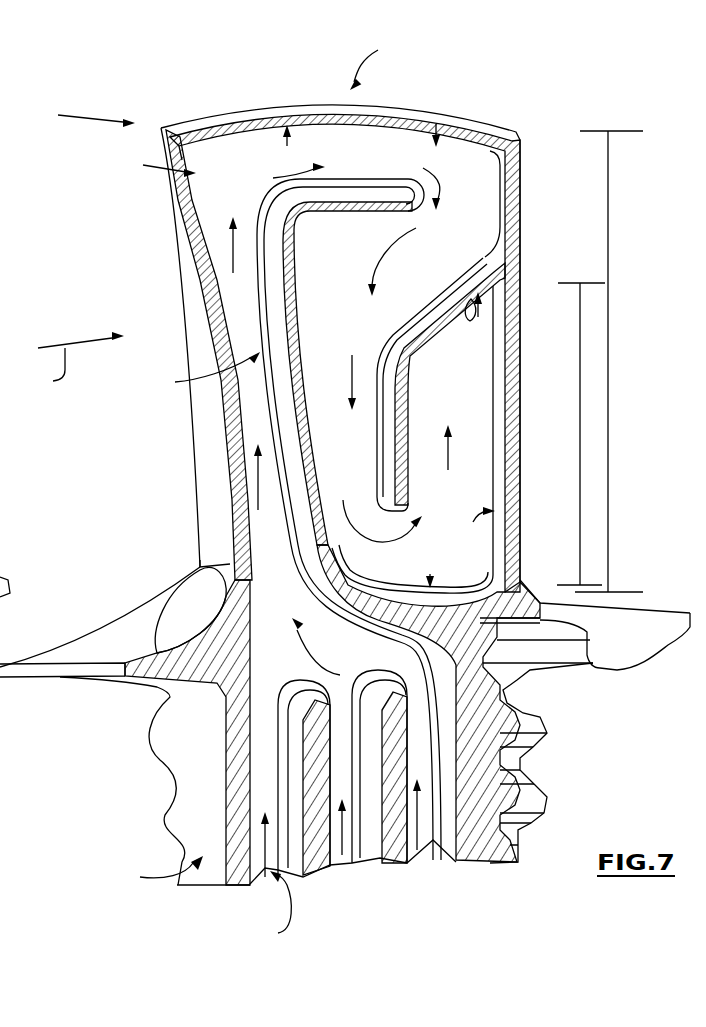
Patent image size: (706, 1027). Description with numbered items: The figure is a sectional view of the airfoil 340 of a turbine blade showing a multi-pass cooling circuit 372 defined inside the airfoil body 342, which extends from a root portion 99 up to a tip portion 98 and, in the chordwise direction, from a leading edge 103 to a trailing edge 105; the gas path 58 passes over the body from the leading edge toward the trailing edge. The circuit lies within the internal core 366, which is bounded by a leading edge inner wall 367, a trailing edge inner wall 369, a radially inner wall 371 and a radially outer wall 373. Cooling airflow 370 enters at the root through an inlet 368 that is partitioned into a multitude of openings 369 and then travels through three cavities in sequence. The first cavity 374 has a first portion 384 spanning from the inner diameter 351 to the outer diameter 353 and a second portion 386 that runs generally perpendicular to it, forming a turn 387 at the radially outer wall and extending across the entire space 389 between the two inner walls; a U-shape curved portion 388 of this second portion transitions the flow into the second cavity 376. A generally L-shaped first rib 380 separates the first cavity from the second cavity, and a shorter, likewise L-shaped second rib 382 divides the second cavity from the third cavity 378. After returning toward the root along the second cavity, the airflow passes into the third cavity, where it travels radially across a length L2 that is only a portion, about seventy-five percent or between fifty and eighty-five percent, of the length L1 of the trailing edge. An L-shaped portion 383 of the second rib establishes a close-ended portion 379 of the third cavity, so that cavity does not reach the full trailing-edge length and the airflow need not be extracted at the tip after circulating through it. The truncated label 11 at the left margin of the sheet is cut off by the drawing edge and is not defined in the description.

The gas turbine engine 11 is at (9, 563).
The gas path 58 is at (74, 364).
The tip portion 98 is at (388, 113).
The root portion 99 is at (522, 790).
The leading edge 103 is at (180, 278).
The trailing edge 105 is at (512, 246).
The airfoil 340 is at (384, 61).
The airfoil body 342 is at (196, 372).
The inner diameter 351 is at (173, 873).
The outer diameter 353 is at (72, 118).
The internal core 366 is at (146, 169).
The leading edge inner wall 367 is at (230, 573).
The inlet 368 is at (282, 813).
The openings 369 is at (510, 520).
The cooling airflow 370 is at (273, 178).
The radially inner wall 371 is at (430, 574).
The cooling circuit 372 is at (436, 124).
The radially outer wall 373 is at (284, 143).
The first cavity 374 is at (240, 316).
The second cavity 376 is at (350, 319).
The third cavity 378 is at (481, 418).
The close-ended portion 379 is at (468, 282).
The first rib 380 is at (288, 423).
The second rib 382 is at (406, 388).
The L-shaped portion 383 is at (456, 290).
The first portion 384 is at (257, 425).
The second portion 386 is at (323, 148).
The turn 387 is at (218, 177).
The U-shape curved portion 388 is at (472, 160).
The entire space 389 is at (383, 162).
The length of trailing edge L1 is at (609, 361).
The length of third cavity L2 is at (581, 434).